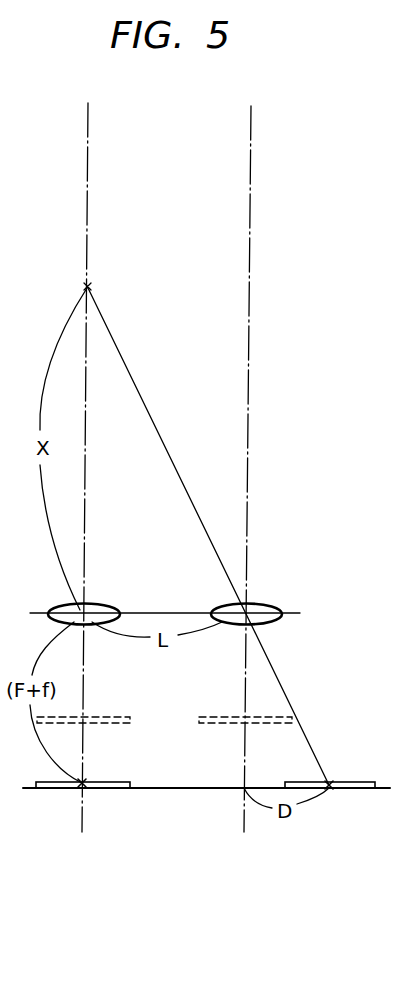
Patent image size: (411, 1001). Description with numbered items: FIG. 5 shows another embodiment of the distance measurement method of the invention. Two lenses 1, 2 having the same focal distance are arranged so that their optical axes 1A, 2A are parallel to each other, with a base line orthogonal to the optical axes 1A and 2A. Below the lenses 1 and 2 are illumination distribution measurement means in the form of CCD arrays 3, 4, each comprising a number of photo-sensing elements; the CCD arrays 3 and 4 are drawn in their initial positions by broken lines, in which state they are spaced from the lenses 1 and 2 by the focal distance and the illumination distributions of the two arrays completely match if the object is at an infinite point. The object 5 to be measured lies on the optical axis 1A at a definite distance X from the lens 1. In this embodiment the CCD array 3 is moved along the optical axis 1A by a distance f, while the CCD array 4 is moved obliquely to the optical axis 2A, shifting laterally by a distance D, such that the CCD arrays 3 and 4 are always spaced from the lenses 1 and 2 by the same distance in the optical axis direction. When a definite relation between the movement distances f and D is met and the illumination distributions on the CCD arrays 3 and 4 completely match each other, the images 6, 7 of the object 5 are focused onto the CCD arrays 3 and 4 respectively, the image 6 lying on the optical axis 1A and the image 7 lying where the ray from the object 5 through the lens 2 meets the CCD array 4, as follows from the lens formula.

The lens 1 is at (107, 605).
The lens 2 is at (273, 605).
The CCD array 3 is at (55, 788).
The CCD array 4 is at (360, 790).
The object 5 is at (92, 287).
The image 6 is at (86, 786).
The image 7 is at (332, 783).
The optical axis 1A is at (88, 170).
The optical axis 2A is at (252, 172).